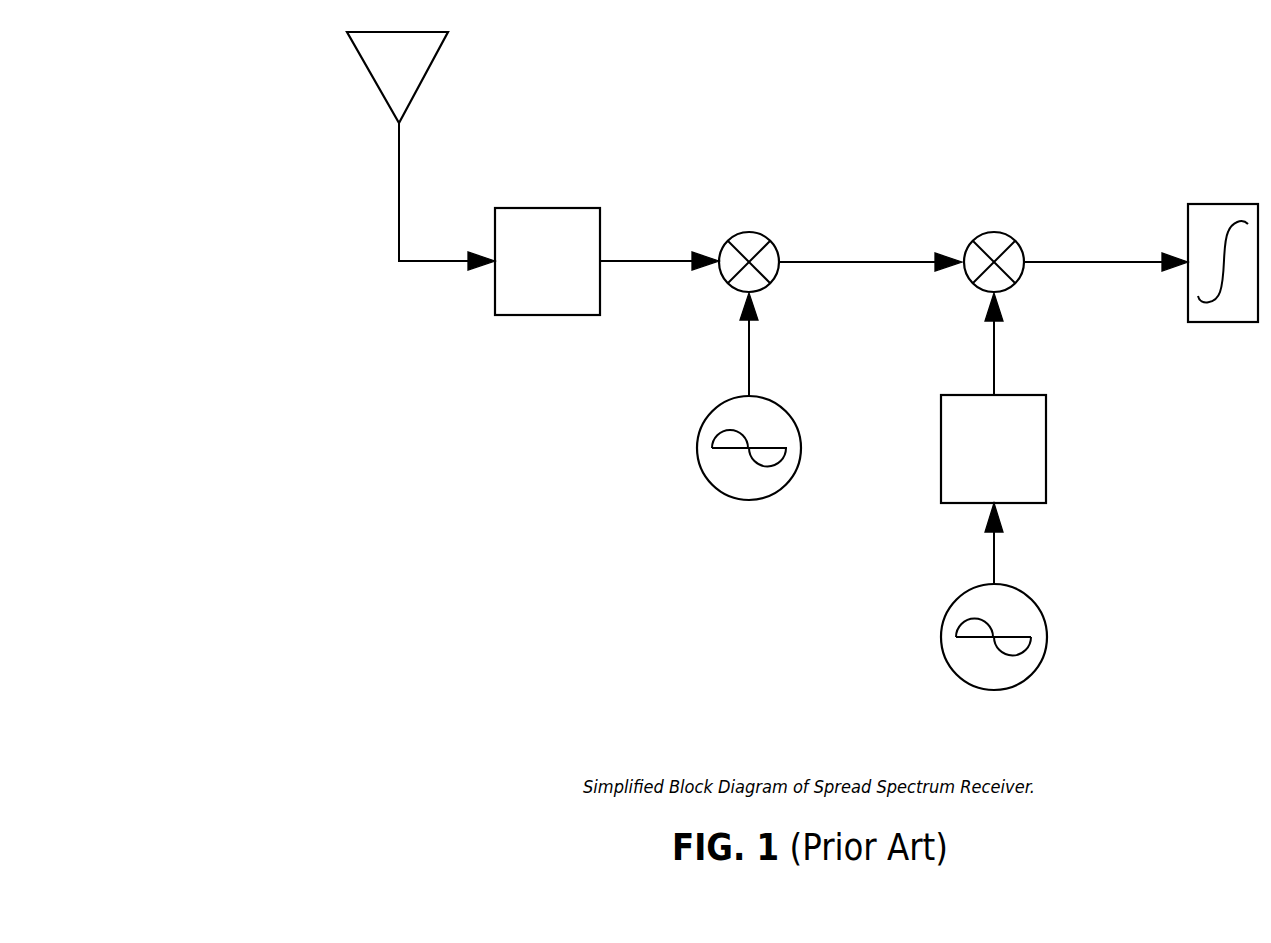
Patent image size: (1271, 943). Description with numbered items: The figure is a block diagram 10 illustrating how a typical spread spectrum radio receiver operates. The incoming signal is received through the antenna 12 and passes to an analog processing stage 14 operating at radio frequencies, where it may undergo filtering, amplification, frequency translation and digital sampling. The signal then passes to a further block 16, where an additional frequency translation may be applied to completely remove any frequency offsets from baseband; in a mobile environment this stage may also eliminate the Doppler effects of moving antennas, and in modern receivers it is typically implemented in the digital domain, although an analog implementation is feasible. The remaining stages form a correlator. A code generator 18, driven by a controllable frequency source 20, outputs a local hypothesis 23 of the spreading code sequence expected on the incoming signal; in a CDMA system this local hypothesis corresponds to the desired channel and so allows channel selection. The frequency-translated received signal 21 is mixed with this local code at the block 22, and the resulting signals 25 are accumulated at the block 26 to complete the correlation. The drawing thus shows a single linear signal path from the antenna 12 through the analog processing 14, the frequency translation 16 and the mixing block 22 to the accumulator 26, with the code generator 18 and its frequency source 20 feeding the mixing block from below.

The block diagram 10 is at (262, 604).
The antenna 12 is at (420, 70).
The analog processing 14 is at (563, 218).
The frequency translation block 16 is at (759, 242).
The code generator 18 is at (1035, 427).
The controllable frequency source 20 is at (1035, 625).
The received signal 21 is at (853, 262).
The mixing block 22 is at (1007, 238).
The local hypothesis 23 is at (995, 353).
The result signals 25 is at (1085, 260).
The accumulation block 26 is at (1225, 203).